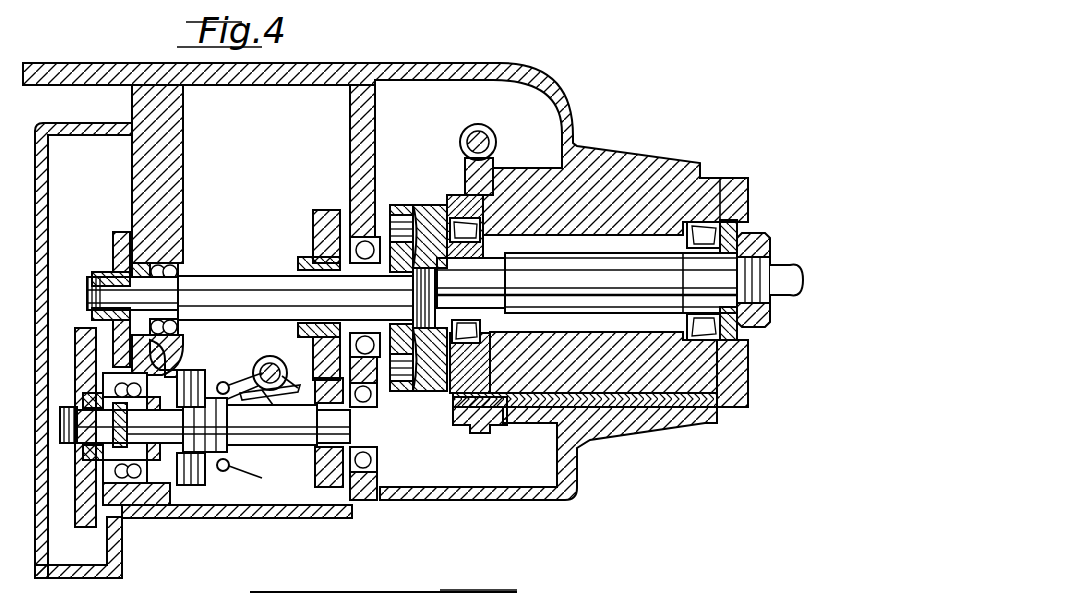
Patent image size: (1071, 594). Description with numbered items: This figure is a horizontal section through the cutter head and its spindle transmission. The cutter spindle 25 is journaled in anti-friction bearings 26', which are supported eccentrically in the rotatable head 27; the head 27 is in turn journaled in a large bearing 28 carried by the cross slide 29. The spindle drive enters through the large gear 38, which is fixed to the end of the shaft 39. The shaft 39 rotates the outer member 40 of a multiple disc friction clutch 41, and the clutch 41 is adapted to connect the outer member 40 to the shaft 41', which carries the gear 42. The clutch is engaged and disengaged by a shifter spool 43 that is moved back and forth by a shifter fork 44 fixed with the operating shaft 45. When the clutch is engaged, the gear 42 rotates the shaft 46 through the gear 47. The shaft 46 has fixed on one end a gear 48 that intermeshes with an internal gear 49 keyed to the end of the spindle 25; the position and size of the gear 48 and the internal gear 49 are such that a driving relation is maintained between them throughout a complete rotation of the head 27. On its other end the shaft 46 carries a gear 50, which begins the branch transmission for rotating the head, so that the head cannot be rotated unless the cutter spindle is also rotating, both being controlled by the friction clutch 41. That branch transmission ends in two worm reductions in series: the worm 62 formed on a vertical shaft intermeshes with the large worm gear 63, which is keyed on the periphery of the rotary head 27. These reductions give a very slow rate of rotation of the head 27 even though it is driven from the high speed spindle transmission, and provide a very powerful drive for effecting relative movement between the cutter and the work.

The cutter spindle 25 is at (620, 270).
The anti-friction bearings 26' is at (602, 281).
The rotatable head 27 is at (750, 205).
The large bearing 28 is at (622, 182).
The cross slide 29 is at (428, 63).
The large gear 38 is at (88, 322).
The shaft 39 is at (75, 415).
The outer member 40 is at (183, 360).
The multiple disc friction clutch 41 is at (219, 436).
The shaft 41' is at (273, 444).
The gear 42 is at (340, 470).
The shifter spool 43 is at (303, 440).
The shifter fork 44 is at (282, 380).
The operating shaft 45 is at (278, 349).
The shaft 46 is at (278, 288).
The gear 47 is at (318, 212).
The gear 48 is at (388, 366).
The internal gear 49 is at (388, 205).
The gear 50 is at (120, 232).
The worm 62 is at (478, 124).
The large worm gear 63 is at (488, 434).